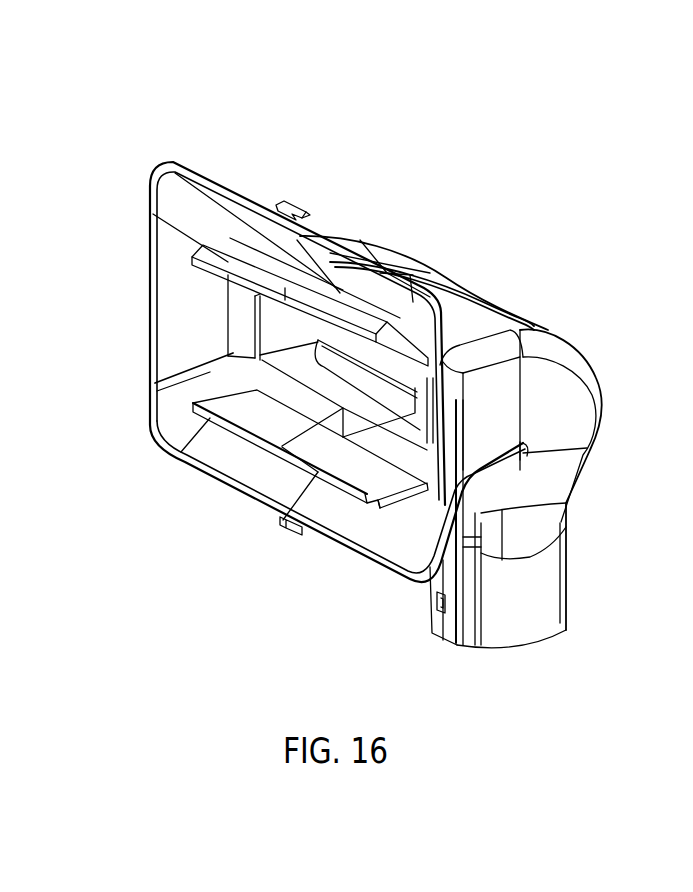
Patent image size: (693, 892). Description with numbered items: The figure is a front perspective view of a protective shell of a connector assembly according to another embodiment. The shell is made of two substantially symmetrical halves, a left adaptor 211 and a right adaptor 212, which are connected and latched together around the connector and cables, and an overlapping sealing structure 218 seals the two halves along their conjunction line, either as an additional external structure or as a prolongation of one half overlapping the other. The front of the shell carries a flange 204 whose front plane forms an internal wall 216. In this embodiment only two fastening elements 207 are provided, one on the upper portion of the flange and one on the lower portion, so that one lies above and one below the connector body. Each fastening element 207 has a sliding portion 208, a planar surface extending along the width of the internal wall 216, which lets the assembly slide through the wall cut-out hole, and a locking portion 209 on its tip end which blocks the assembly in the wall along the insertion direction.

The flange 204 is at (131, 208).
The overlapping sealing structure 218 is at (297, 208).
The right adaptor 212 is at (390, 245).
The left adaptor 211 is at (547, 328).
The internal wall 216 is at (242, 358).
The fastening element 207 is at (281, 476).
The sliding portion 208 is at (392, 506).
The locking portion 209 is at (367, 511).